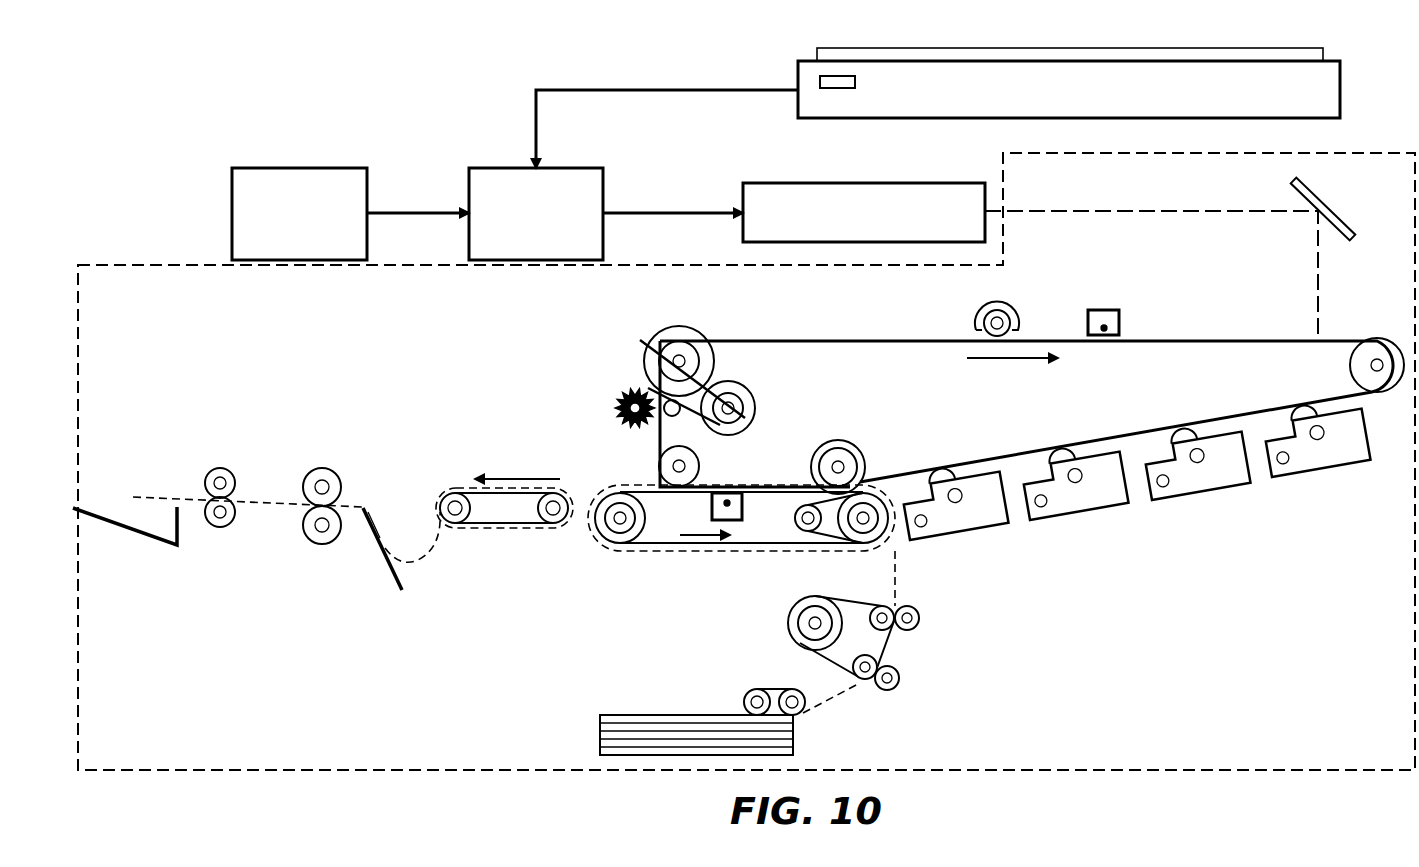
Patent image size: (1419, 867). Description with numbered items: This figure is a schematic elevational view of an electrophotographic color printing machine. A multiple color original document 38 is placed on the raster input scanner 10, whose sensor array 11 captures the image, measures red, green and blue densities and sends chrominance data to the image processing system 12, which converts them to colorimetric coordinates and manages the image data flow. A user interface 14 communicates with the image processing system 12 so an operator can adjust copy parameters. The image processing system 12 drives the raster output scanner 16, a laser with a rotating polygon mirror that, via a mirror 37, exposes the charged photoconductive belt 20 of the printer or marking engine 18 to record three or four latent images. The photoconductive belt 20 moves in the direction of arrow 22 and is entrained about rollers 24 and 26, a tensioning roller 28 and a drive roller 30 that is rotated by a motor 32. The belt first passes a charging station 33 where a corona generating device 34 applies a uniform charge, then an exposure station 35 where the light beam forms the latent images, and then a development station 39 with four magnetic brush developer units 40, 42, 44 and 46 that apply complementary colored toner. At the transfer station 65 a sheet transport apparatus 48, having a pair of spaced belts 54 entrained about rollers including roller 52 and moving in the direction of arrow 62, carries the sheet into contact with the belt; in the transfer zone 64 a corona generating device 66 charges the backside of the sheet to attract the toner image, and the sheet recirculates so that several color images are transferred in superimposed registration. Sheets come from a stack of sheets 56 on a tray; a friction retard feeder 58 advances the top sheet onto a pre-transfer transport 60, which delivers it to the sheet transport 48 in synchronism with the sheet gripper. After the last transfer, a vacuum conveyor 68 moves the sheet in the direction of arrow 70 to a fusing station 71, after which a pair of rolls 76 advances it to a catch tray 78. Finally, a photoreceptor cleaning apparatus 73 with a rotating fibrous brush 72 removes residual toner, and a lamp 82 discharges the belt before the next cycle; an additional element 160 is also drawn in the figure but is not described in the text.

The raster input scanner (RIS) 10 is at (780, 30).
The sensor array 11 is at (838, 76).
The image processing system (IPS) 12 is at (585, 150).
The user interface (UI) 14 is at (338, 150).
The raster output scanner (ROS) 16 is at (898, 158).
The printer or marking engine 18 is at (1357, 130).
The photoconductive belt 20 is at (1238, 339).
The arrow 22 is at (1000, 362).
The roller 24 is at (700, 462).
The roller 26 is at (865, 465).
The tensioning roller 28 is at (1377, 338).
The drive roller 30 is at (682, 330).
The motor 32 is at (748, 400).
The charging station 33 is at (1140, 337).
The corona generating device 34 is at (1112, 308).
The exposure station 35 is at (1302, 337).
The mirror 37 is at (1318, 197).
The original document 38 is at (1213, 48).
The development station 39 is at (1192, 602).
The developer unit 40 is at (1315, 483).
The developer unit 42 is at (1200, 502).
The developer unit 44 is at (1078, 522).
The developer unit 46 is at (968, 542).
The sheet transport apparatus 48 is at (637, 568).
The roller 52 is at (875, 548).
The belts 54 is at (768, 548).
The stack of sheets 56 is at (645, 715).
The friction retard feeder 58 is at (790, 688).
The pre-transfer transport 60 is at (895, 640).
The arrow 62 is at (705, 550).
The transfer zone 64 is at (737, 480).
The transfer station 65 is at (752, 500).
The corona generating device 66 is at (708, 497).
The vacuum conveyor 68 is at (515, 526).
The arrow 70 is at (525, 478).
The fusing station 71 is at (343, 440).
The fibrous brush 72 is at (615, 402).
The photoreceptor cleaning apparatus 73 is at (615, 385).
The pair of rolls 76 is at (222, 482).
The catch tray 78 is at (150, 540).
The lamp 82 is at (1012, 305).
The sensor 160 is at (868, 392).